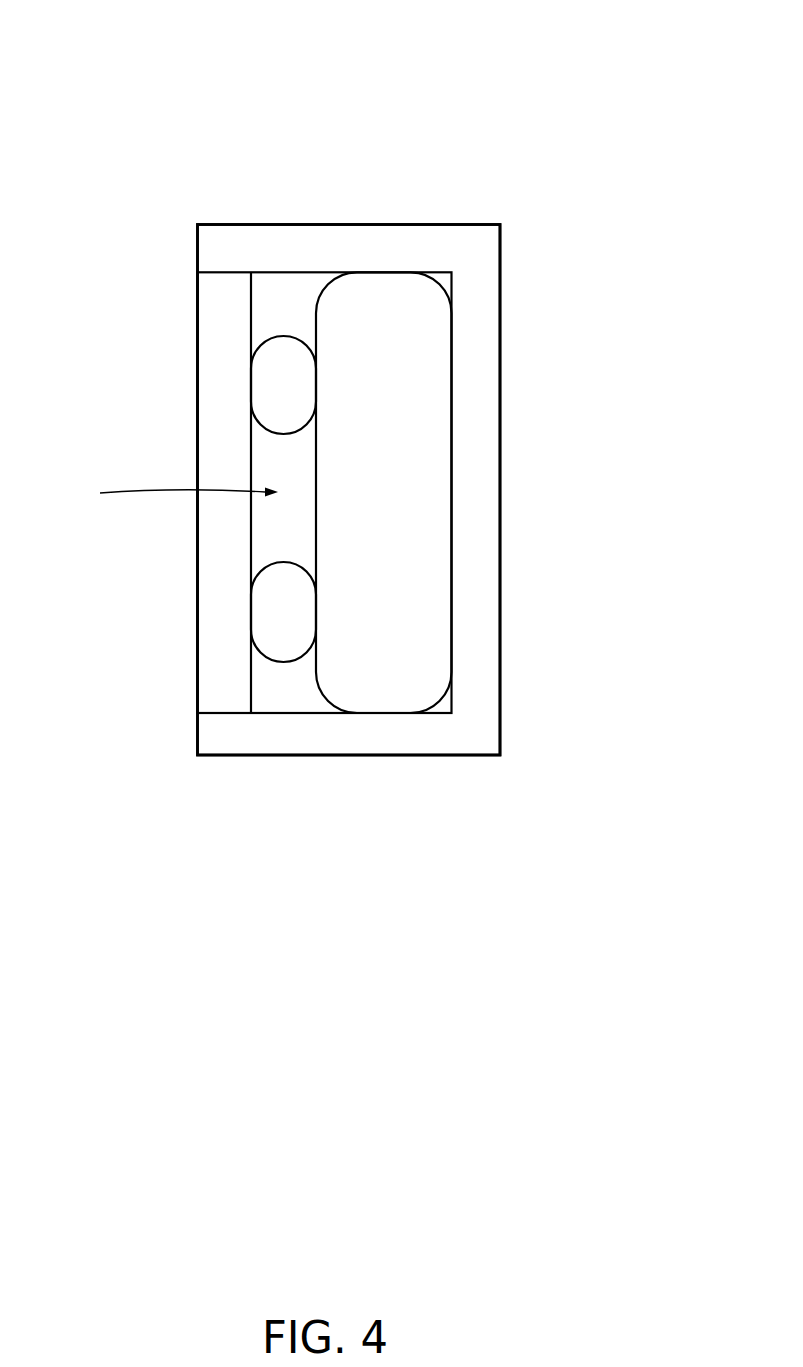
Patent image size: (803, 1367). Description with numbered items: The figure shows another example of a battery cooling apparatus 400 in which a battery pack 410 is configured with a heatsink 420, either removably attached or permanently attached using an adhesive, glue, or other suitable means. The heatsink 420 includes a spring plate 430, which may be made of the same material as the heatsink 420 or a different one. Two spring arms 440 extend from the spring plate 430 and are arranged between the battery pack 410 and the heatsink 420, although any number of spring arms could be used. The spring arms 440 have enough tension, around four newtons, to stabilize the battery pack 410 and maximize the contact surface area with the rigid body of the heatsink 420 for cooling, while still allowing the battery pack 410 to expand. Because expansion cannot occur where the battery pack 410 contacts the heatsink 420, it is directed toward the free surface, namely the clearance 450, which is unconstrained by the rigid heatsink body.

The battery cooling apparatus 400 is at (412, 77).
The battery pack 410 is at (410, 549).
The heatsink 420 is at (500, 323).
The spring plate 430 is at (225, 539).
The spring arms 440 is at (288, 393).
The clearance 450 is at (165, 492).